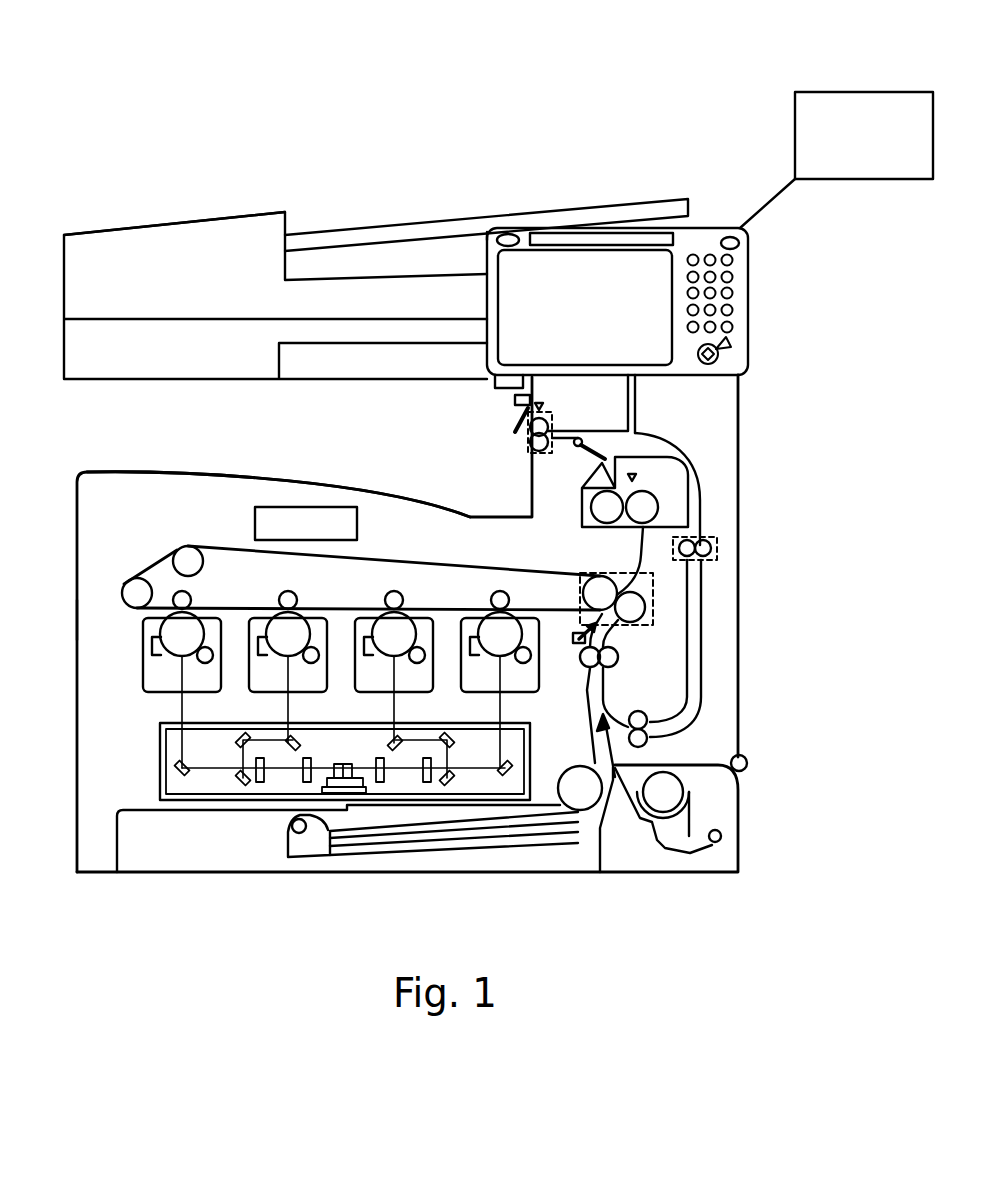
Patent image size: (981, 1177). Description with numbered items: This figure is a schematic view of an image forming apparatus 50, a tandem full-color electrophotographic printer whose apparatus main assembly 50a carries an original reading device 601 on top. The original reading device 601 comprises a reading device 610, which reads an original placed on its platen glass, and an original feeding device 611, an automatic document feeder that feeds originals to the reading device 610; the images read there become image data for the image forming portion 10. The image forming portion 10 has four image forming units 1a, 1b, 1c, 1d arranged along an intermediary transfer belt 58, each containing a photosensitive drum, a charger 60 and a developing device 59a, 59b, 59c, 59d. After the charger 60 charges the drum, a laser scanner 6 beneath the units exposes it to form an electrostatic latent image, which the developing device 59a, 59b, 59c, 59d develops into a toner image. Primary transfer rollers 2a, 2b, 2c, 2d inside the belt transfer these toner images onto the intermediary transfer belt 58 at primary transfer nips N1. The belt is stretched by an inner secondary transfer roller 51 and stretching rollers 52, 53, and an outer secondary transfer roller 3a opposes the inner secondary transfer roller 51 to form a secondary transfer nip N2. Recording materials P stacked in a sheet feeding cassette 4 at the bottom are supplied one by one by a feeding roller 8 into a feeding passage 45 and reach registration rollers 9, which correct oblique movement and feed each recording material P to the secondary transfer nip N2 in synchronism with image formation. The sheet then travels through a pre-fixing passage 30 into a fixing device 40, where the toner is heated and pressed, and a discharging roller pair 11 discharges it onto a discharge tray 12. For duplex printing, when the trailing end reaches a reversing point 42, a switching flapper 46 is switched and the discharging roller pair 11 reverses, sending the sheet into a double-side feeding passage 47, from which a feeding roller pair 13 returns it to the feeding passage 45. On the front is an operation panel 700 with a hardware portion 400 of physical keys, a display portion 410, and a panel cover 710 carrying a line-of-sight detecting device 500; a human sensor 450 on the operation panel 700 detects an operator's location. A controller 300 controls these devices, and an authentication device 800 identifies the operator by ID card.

The image forming unit 1a is at (172, 692).
The image forming unit 1b is at (280, 692).
The image forming unit 1c is at (384, 692).
The image forming unit 1d is at (490, 692).
The primary transfer roller 2a is at (193, 603).
The primary transfer roller 2b is at (299, 603).
The primary transfer roller 2c is at (405, 603).
The primary transfer roller 2d is at (509, 603).
The outer secondary transfer roller 3a is at (640, 607).
The sheet feeding cassette 4 is at (108, 843).
The laser scanner 6 is at (150, 780).
The feeding roller 8 is at (582, 812).
The registration rollers 9 is at (625, 645).
The image forming portion 10 is at (283, 647).
The discharging roller pair 11 is at (516, 443).
The discharge tray 12 is at (308, 476).
The feeding roller pair 13 is at (720, 548).
The pre-fixing passage 30 is at (370, 557).
The fixing device 40 is at (676, 500).
The reversing point 42 is at (570, 431).
The feeding passage 45 is at (612, 727).
The switching flapper 46 is at (588, 447).
The double-side feeding passage 47 is at (702, 472).
The image forming apparatus 50 is at (762, 390).
The apparatus main assembly 50a is at (77, 615).
The inner secondary transfer roller 51 is at (589, 588).
The stretching roller 52 is at (183, 553).
The stretching roller 53 is at (126, 593).
The intermediary transfer belt 58 is at (157, 567).
The developing device 59a is at (150, 648).
The developing device 59b is at (256, 648).
The developing device 59c is at (362, 648).
The developing device 59d is at (468, 648).
The charger 60 is at (203, 664).
The controller 300 is at (357, 523).
The hardware portion 400 is at (715, 250).
The display portion 410 is at (616, 270).
The human sensor 450 is at (495, 382).
The line-of-sight detecting device 500 is at (548, 240).
The original reading device 601 is at (86, 198).
The reading device 610 is at (72, 353).
The original feeding device 611 is at (320, 230).
The operation panel 700 is at (762, 262).
The panel cover 710 is at (496, 226).
The authentication device 800 is at (877, 90).
The primary transfer nip N1 is at (178, 612).
The secondary transfer nip N2 is at (620, 600).
The recording material P is at (430, 840).